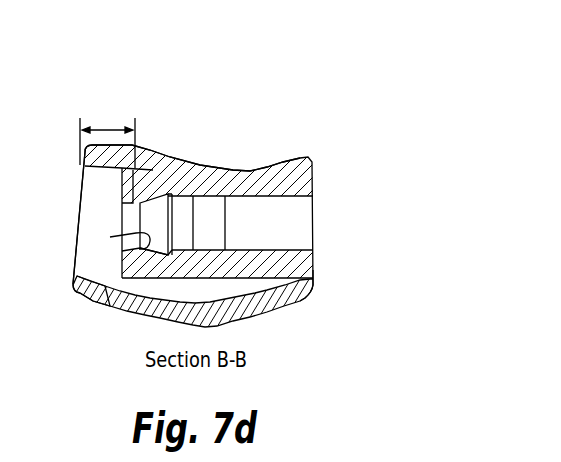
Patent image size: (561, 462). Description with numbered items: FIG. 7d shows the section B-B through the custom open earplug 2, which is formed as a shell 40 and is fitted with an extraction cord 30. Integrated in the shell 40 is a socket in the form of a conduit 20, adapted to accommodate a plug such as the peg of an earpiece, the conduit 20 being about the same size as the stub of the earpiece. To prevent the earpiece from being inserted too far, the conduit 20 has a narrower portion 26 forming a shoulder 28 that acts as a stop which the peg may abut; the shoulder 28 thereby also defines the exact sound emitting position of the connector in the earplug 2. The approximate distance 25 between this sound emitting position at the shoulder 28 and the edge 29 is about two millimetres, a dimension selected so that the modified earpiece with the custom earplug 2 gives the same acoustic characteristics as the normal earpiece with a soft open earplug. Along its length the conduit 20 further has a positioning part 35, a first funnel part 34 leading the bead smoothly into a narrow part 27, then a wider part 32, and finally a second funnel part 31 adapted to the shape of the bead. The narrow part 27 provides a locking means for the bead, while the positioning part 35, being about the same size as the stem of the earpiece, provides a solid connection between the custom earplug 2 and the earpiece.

The custom open earplug 2 is at (273, 142).
The conduit 20 is at (291, 224).
The approximate distance 25 is at (103, 126).
The narrower portion 26 is at (142, 250).
The narrow part 27 is at (200, 164).
The shoulder 28 is at (110, 237).
The edge 29 is at (83, 153).
The extraction cord 30 is at (160, 192).
The second funnel part 31 is at (100, 290).
The wider part 32 is at (172, 193).
The first funnel part 34 is at (213, 250).
The positioning part 35 is at (315, 292).
The shell 40 is at (113, 305).